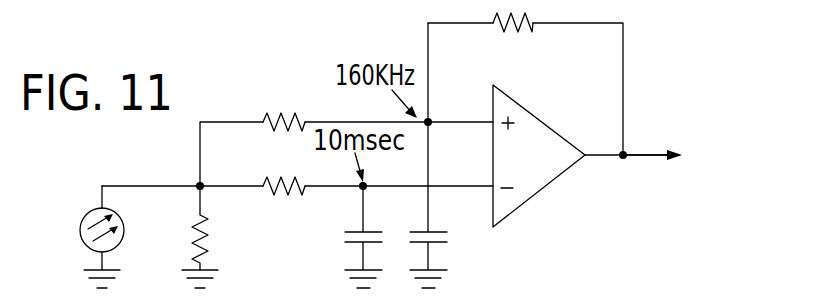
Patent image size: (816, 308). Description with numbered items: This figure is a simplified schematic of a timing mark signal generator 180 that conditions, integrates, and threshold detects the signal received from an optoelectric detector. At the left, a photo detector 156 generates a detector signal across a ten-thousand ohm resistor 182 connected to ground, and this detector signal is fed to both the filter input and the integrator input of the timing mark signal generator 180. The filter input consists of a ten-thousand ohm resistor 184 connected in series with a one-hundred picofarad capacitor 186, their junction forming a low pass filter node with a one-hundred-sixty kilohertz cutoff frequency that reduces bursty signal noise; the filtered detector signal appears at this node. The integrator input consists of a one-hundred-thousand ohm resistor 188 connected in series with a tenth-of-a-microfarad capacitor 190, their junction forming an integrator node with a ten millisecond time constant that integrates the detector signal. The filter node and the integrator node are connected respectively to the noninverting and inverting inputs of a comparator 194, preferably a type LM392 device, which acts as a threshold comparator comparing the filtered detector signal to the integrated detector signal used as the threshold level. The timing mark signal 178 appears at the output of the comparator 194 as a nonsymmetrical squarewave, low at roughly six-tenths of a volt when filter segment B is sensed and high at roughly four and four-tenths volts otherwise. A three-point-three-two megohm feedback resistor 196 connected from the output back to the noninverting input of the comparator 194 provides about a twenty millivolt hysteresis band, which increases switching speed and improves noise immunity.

The photo detector 156 is at (80, 216).
The resistor 182 is at (193, 240).
The resistor 184 is at (300, 110).
The resistor 188 is at (282, 194).
The capacitor 190 is at (347, 253).
The capacitor 186 is at (437, 243).
The feedback resistor 196 is at (503, 33).
The comparator 194 is at (548, 153).
The timing mark signal 178 is at (647, 158).
The timing mark signal generator 180 is at (710, 232).